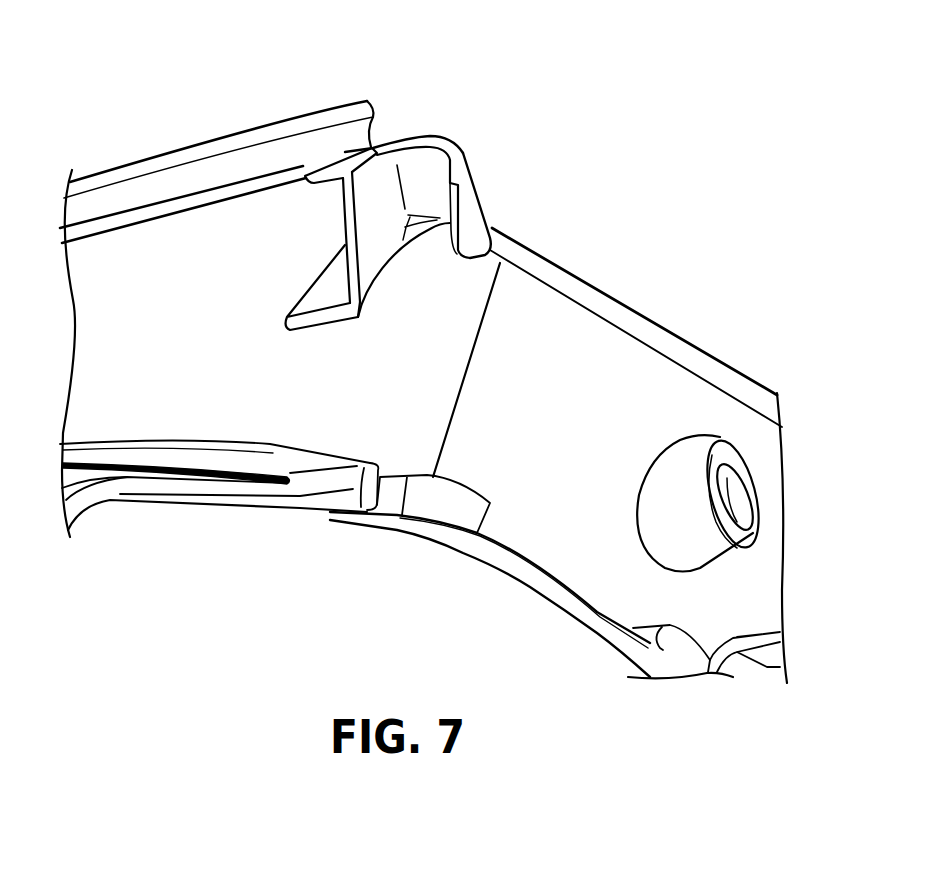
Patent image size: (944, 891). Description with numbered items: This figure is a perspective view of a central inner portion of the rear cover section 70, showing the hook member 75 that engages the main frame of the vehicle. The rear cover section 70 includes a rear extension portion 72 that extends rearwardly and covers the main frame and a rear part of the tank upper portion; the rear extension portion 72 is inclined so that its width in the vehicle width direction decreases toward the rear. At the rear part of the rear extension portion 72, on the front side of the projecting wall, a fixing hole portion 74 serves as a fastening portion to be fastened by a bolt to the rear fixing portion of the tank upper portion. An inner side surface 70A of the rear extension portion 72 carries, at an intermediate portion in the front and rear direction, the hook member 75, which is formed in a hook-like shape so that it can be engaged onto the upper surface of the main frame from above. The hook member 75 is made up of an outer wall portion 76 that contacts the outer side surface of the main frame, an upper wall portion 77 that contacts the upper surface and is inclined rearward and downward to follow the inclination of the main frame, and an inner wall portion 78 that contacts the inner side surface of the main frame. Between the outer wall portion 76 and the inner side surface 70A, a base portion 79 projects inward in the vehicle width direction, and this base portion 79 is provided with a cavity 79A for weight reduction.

The rear cover section 70 is at (591, 262).
The inner side surface 70A is at (233, 255).
The rear extension portion 72 is at (612, 362).
The fixing hole portion 74 is at (738, 485).
The hook member 75 is at (472, 113).
The outer wall portion 76 is at (367, 207).
The upper wall portion 77 is at (425, 167).
The inner wall portion 78 is at (473, 208).
The base portion 79 is at (325, 323).
The cavity 79A is at (335, 235).